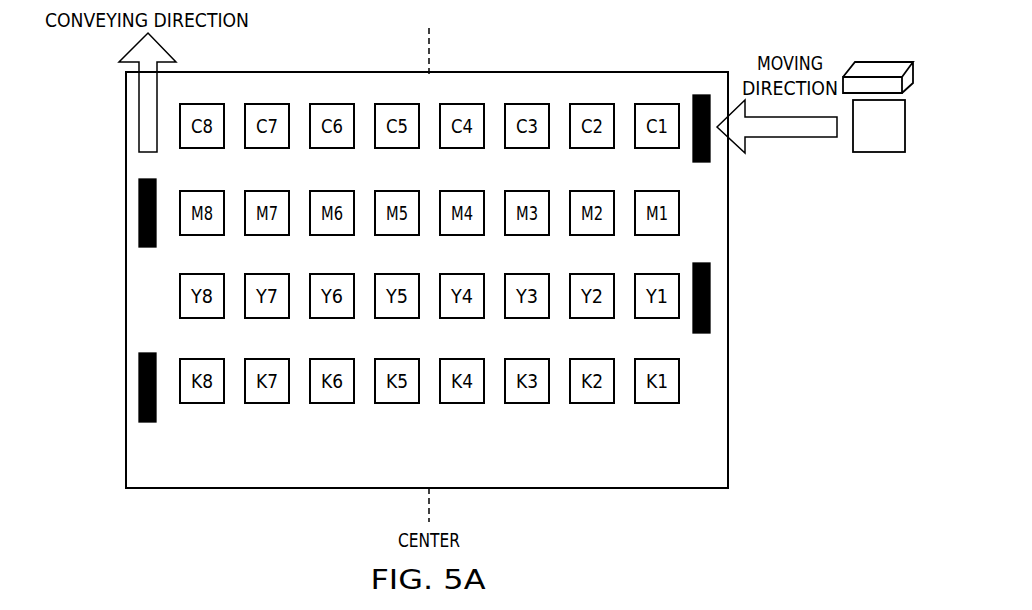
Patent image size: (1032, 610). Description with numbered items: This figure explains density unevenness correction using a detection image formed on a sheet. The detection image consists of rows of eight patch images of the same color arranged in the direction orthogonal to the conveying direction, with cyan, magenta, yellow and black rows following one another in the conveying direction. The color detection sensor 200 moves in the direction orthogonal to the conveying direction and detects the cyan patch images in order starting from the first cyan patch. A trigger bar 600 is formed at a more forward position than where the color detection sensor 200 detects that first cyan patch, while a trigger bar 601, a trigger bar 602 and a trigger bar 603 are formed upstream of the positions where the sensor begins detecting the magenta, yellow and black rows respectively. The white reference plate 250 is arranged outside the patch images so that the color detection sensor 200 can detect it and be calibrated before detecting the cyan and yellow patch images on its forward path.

The trigger bar 600 is at (700, 95).
The trigger bar 601 is at (140, 210).
The trigger bar 602 is at (710, 298).
The trigger bar 603 is at (140, 378).
The color detection sensor 200 is at (878, 67).
The white reference plate 250 is at (877, 152).